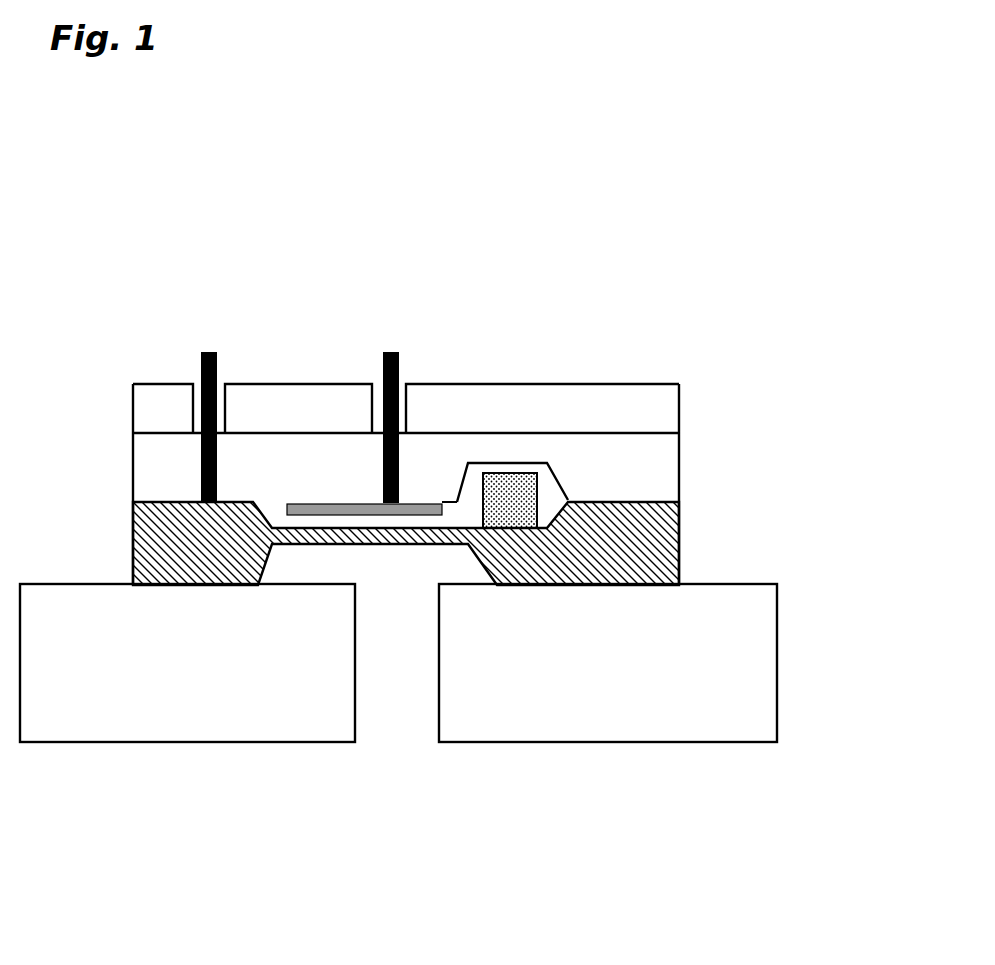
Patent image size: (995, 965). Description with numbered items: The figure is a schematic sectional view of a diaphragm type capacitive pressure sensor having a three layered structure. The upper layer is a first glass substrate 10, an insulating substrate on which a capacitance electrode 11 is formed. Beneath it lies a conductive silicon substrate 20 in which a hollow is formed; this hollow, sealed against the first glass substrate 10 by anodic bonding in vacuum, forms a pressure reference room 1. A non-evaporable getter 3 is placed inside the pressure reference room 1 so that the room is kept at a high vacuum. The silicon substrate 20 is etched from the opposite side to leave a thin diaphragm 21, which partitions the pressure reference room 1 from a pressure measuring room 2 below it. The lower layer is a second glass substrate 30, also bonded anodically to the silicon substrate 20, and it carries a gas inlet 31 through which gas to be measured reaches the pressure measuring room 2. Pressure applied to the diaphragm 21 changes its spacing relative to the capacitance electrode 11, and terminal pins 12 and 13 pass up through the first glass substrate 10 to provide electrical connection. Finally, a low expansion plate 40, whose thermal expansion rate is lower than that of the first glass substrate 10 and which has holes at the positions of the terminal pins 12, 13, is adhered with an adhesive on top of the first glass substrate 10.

The pressure reference room 1 is at (467, 508).
The pressure measuring room 2 is at (232, 530).
The non-evaporable getter 3 is at (510, 477).
The first glass substrate 10 is at (648, 473).
The capacitance electrode 11 is at (317, 500).
The terminal pin 12 is at (398, 387).
The terminal pin 13 is at (221, 384).
The silicon substrate 20 is at (652, 547).
The diaphragm 21 is at (202, 495).
The second glass substrate 30 is at (733, 700).
The gas inlet 31 is at (396, 684).
The low expansion plate 40 is at (657, 397).